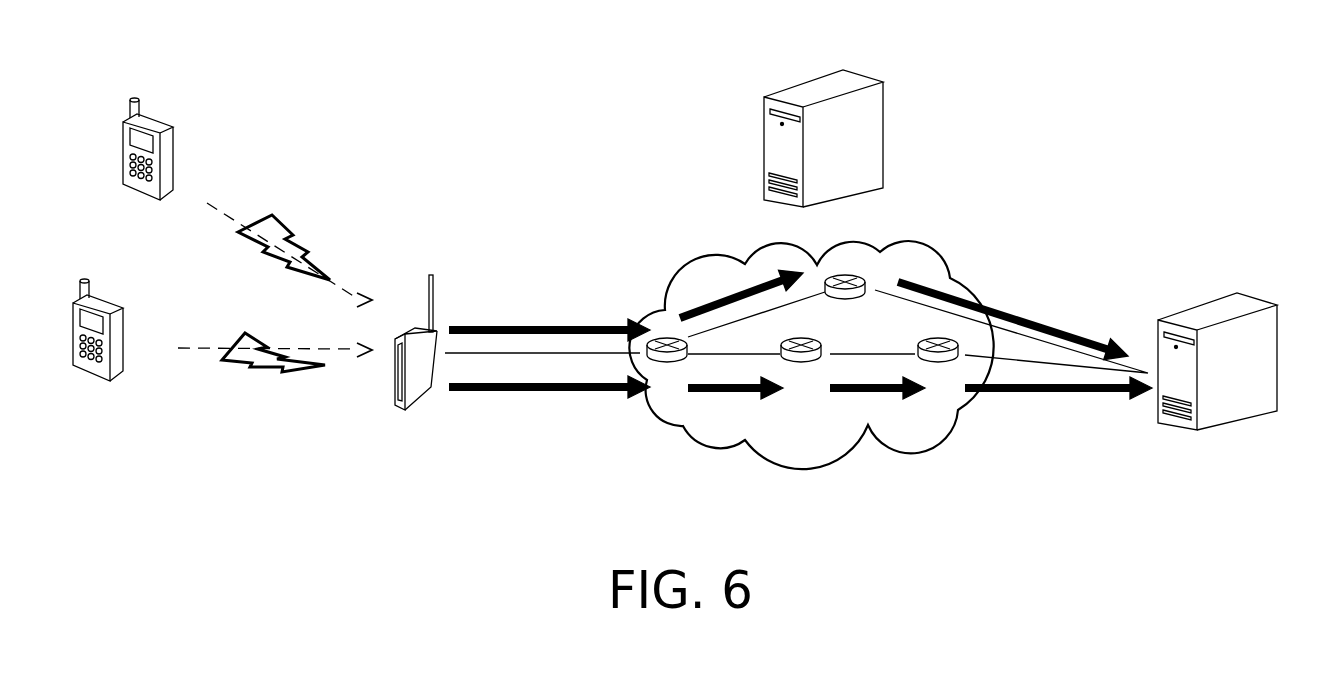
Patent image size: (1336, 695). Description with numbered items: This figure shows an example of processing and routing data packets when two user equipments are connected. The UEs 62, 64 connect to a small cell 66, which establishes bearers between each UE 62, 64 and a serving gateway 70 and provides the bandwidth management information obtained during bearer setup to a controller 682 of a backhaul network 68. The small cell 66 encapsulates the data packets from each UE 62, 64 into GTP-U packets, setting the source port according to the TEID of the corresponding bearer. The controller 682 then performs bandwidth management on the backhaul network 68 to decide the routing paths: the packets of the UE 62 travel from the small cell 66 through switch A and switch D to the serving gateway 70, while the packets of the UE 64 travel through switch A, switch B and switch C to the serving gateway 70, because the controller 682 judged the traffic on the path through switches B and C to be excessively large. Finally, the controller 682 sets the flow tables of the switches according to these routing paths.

The UE 62 is at (153, 112).
The UE 64 is at (102, 298).
The small cell 66 is at (415, 402).
The backhaul network 68 is at (967, 272).
The controller 682 is at (855, 72).
The serving gateway 70 is at (1250, 297).